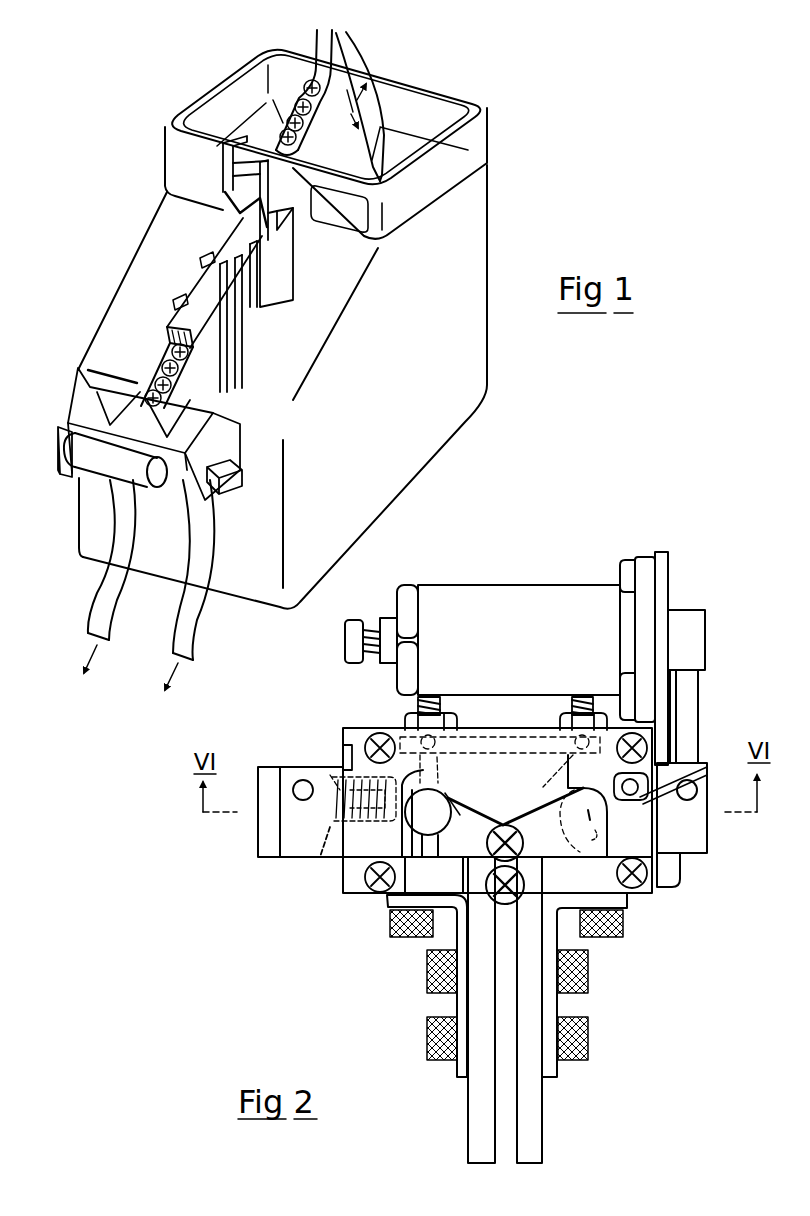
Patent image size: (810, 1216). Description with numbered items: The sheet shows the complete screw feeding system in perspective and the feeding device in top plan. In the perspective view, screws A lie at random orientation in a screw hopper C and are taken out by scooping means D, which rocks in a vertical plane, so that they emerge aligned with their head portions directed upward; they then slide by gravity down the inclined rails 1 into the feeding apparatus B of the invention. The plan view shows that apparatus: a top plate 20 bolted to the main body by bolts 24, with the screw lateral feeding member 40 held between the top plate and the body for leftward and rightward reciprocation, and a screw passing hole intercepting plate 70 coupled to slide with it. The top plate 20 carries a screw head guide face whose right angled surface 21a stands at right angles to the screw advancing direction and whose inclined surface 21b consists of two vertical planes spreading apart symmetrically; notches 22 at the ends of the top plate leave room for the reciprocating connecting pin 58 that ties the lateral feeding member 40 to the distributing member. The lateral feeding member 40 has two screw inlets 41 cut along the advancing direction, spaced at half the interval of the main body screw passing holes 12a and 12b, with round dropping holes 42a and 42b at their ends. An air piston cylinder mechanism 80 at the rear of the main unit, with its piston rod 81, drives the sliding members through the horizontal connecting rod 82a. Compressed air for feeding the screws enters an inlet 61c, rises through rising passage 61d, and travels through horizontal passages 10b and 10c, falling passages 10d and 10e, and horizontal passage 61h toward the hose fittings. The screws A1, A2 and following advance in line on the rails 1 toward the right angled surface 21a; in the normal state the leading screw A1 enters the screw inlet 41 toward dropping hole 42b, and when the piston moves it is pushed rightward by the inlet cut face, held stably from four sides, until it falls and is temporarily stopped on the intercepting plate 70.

In FIG. 1, the screws A is at (298, 100).
In FIG. 1, the feeding apparatus B is at (57, 423).
In FIG. 1, the screw hopper C is at (490, 264).
In FIG. 1, the scooping means D is at (368, 52).
In FIG. 1, the rails 1 is at (150, 372).
In FIG. 2, the rails 1 is at (477, 1103).
In FIG. 1, the top plate 20 is at (80, 407).
In FIG. 2, the top plate 20 is at (391, 719).
In FIG. 1, the screw passing hole intercepting plate 70 is at (230, 478).
In FIG. 1, the air piston cylinder mechanism 80 is at (87, 480).
In FIG. 2, the air piston cylinder mechanism 80 is at (505, 622).
In FIG. 2, the piston rod 81 is at (687, 620).
In FIG. 2, the horizontal connecting rod 82a is at (698, 708).
In FIG. 2, the connecting pin 58 is at (290, 790).
In FIG. 2, the notches 22 is at (707, 768).
In FIG. 2, the rising passage 61d is at (282, 770).
In FIG. 2, the horizontal passage 10b is at (345, 750).
In FIG. 2, the falling passage 10d is at (330, 773).
In FIG. 2, the horizontal passage 10c is at (473, 740).
In FIG. 2, the falling passage 10e is at (518, 812).
In FIG. 2, the right angled surface 21a is at (515, 791).
In FIG. 2, the inclined surface 21b is at (463, 812).
In FIG. 2, the dropping hole 42b is at (528, 843).
In FIG. 2, the dropping hole 42a is at (488, 897).
In FIG. 2, the screw passing hole 12a is at (505, 885).
In FIG. 2, the screw passing hole 12b is at (621, 843).
In FIG. 2, the inlet 61c is at (330, 850).
In FIG. 2, the horizontal passage 61h is at (389, 813).
In FIG. 2, the screw inlets 41 is at (433, 834).
In FIG. 2, the screw lateral feeding member 40 is at (289, 861).
In FIG. 2, the bolts 24 is at (362, 882).
In FIG. 2, the leading screw A1 is at (450, 902).
In FIG. 2, the second screw A2 is at (465, 905).